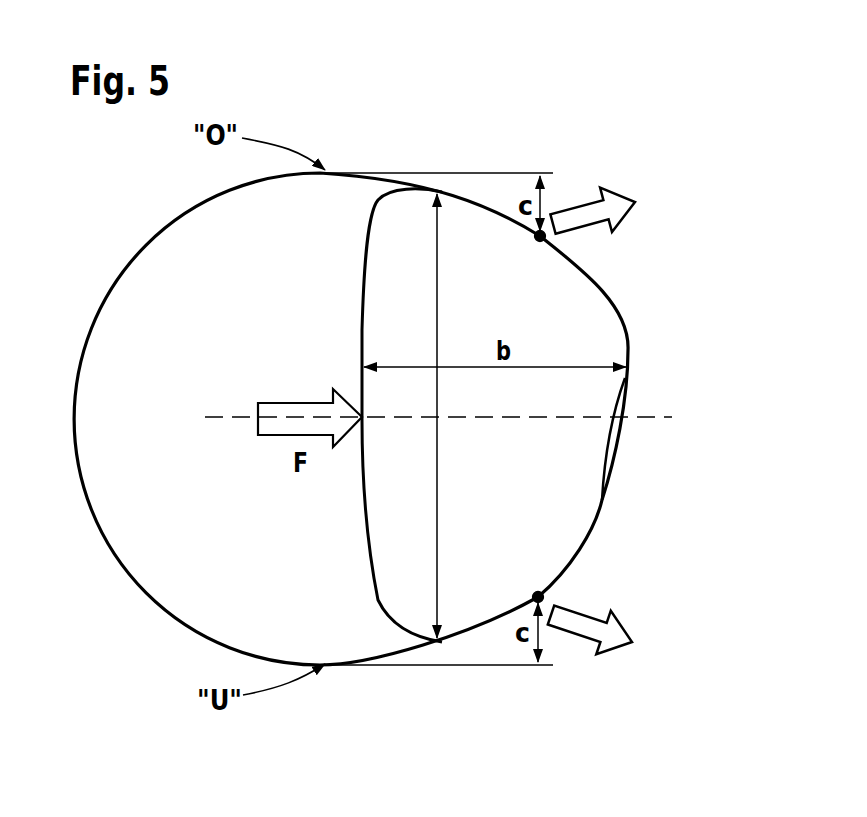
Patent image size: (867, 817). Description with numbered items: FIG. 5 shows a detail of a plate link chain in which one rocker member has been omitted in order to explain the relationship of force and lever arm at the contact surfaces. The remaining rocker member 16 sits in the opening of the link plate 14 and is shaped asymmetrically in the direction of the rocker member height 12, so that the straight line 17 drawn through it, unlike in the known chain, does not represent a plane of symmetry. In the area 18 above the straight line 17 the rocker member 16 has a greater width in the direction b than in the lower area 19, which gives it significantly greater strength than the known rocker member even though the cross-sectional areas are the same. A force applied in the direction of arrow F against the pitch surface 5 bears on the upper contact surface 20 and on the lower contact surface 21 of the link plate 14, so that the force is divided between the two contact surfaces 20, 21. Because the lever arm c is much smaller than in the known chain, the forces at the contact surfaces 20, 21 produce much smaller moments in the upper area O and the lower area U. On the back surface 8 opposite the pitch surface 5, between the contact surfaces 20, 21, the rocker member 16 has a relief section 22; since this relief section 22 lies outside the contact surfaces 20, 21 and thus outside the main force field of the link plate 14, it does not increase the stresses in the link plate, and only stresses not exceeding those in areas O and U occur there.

The link plate 14 is at (468, 132).
The pitch surface 5 is at (366, 529).
The rocker member height 12 is at (437, 492).
The upper contact surface 20 is at (538, 238).
The lower contact surface 21 is at (537, 595).
The area above straight line 18 is at (580, 293).
The back surface 8 is at (631, 342).
The straight line 17 is at (678, 417).
The relief section 22 is at (607, 443).
The rocker member 16 is at (578, 513).
The lower area 19 is at (563, 553).